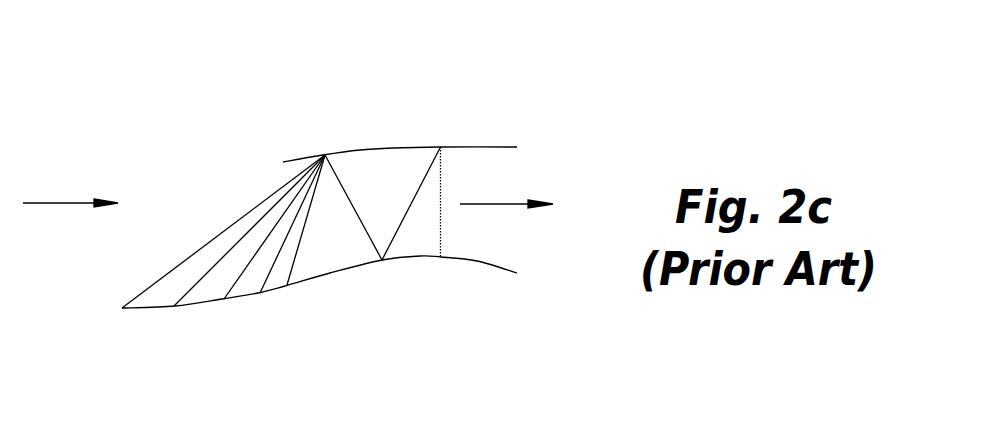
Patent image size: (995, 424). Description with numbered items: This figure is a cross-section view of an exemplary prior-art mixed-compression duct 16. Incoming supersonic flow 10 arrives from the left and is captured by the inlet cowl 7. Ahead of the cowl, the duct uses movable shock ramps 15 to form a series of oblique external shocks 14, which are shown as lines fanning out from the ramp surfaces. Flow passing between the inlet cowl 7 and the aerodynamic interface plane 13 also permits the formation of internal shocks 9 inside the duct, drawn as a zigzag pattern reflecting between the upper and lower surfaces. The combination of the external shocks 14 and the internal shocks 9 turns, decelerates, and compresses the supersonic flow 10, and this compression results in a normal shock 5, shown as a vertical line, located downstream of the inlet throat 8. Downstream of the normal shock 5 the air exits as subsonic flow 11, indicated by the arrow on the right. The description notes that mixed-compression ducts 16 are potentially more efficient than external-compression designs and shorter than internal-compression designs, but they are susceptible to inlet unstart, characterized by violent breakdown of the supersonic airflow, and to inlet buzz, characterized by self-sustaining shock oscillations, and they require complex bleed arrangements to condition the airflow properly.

The normal shock 5 is at (442, 177).
The inlet cowl 7 is at (348, 152).
The inlet throat 8 is at (415, 258).
The internal shocks 9 is at (413, 197).
The supersonic flow 10 is at (70, 216).
The subsonic flow 11 is at (506, 217).
The aerodynamic interface plane 13 is at (495, 267).
The oblique external shocks 14 is at (313, 192).
The movable shock ramps 15 is at (163, 307).
The mixed-compression duct 16 is at (422, 128).